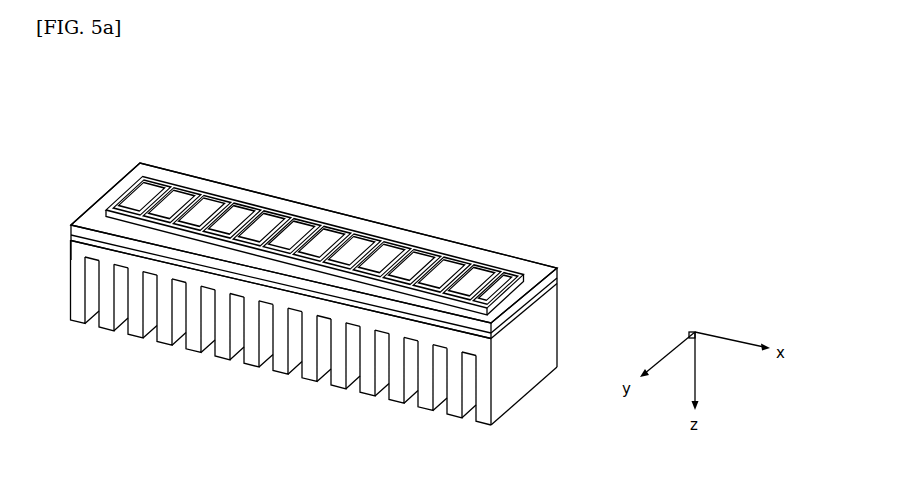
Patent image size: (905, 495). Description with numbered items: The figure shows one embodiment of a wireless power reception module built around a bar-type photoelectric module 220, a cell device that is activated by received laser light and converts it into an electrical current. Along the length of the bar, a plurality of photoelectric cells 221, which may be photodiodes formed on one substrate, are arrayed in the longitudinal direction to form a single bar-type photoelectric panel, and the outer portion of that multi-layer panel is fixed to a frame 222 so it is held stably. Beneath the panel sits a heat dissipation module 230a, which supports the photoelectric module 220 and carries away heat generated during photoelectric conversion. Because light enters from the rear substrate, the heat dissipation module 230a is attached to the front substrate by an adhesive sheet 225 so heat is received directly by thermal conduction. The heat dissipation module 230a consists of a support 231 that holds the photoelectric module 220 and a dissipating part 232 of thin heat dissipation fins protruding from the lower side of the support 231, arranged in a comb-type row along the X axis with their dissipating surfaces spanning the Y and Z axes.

The photoelectric module 220 is at (530, 285).
The photoelectric cells 221 is at (471, 270).
The frame 222 is at (533, 276).
The adhesive sheet 225 is at (500, 330).
The heat dissipation module 230a is at (489, 391).
The support 231 is at (76, 249).
The dissipating part 232 is at (80, 312).